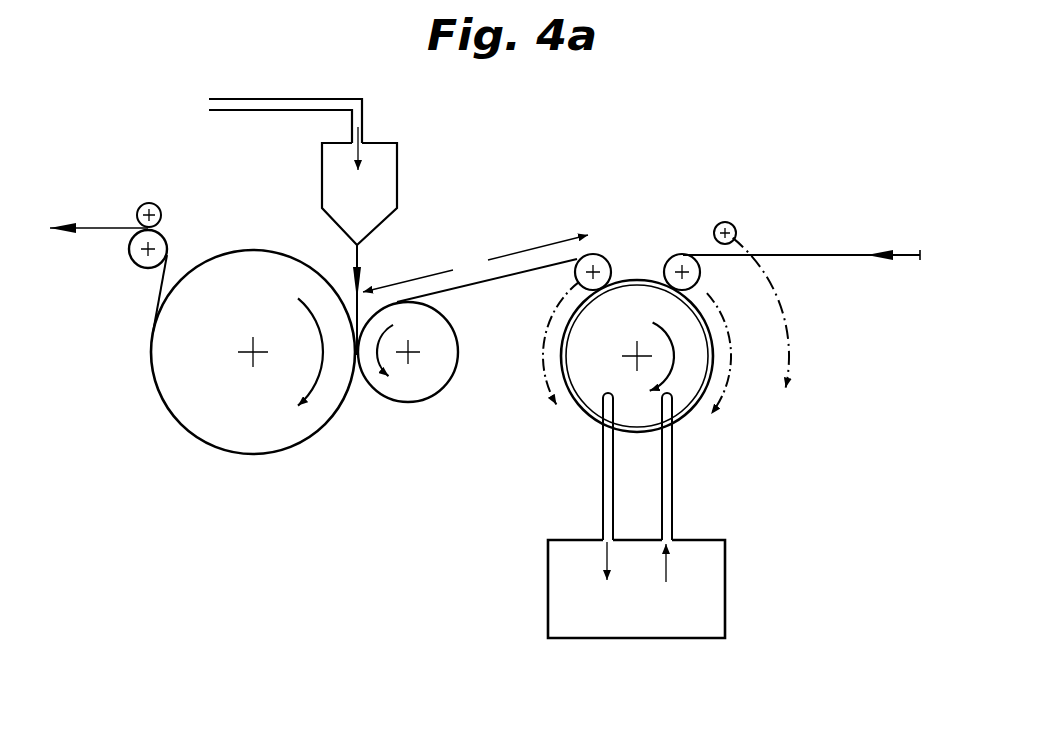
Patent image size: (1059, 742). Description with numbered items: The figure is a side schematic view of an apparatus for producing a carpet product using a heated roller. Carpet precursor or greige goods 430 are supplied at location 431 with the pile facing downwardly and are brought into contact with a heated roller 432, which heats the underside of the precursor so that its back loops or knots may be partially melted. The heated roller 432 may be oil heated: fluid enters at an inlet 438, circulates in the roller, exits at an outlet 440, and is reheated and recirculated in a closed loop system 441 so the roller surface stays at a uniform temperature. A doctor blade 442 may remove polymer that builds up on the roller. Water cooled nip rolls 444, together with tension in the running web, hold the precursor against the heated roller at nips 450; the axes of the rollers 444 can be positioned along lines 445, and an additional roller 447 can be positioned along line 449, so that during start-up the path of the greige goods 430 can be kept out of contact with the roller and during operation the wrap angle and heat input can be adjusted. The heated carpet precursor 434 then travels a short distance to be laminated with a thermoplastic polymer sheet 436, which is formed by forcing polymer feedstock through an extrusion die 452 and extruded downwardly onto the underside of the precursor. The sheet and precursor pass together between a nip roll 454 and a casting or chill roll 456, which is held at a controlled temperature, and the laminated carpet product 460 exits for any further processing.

The carpet precursor or greige goods 430 is at (815, 253).
The supply location 431 is at (908, 253).
The heated roller 432 is at (583, 388).
The heated carpet precursor 434 is at (467, 285).
The thermoplastic polymer sheet 436 is at (360, 257).
The fluid inlet 438 is at (673, 398).
The fluid outlet 440 is at (603, 398).
The closed loop system 441 is at (725, 590).
The doctor blade 442 is at (620, 280).
The water cooled nip roll 444 is at (598, 254).
The lines 445 is at (542, 337).
The additional roller 447 is at (735, 226).
The line 449 is at (783, 311).
The nip 450 is at (287, 98).
The extrusion die 452 is at (397, 182).
The nip roll 454 is at (411, 402).
The casting or chill roll 456 is at (252, 452).
The carpet product 460 is at (107, 232).